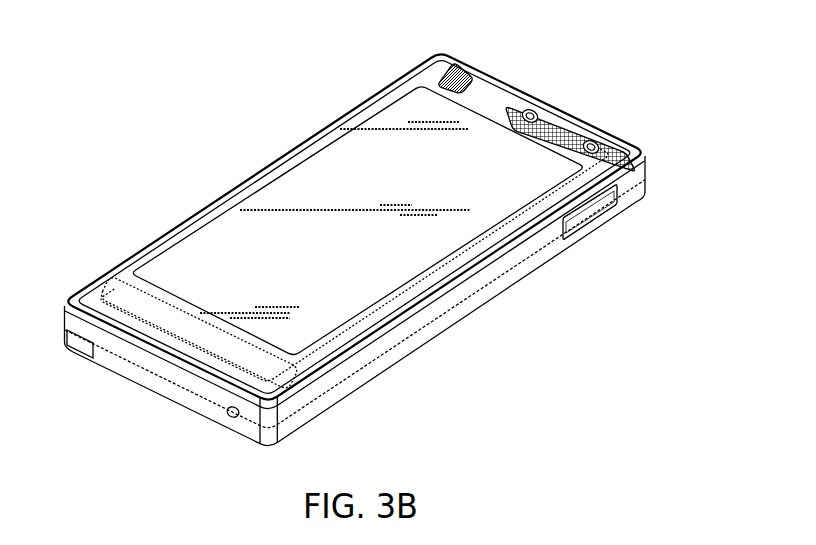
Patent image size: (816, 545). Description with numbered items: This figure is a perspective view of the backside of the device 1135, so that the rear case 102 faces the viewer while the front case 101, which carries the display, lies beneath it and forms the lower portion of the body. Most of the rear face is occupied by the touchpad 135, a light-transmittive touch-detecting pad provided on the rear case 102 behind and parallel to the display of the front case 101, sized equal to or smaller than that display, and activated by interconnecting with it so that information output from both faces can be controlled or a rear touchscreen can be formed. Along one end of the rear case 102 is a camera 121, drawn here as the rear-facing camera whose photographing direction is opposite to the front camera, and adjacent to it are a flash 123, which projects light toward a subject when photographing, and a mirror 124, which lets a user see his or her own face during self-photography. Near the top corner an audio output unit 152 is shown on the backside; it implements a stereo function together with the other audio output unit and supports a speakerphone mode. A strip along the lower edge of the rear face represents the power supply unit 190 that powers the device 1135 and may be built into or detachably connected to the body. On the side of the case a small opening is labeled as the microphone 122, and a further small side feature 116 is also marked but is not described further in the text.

The device 1135 is at (276, 85).
The touchpad 135 is at (293, 187).
The audio output unit 152 is at (468, 70).
The camera 121 is at (543, 107).
The flash 123 is at (580, 114).
The mirror 124 is at (597, 136).
The rear case 102 is at (647, 164).
The front case 101 is at (646, 189).
The power supply unit 190 is at (95, 275).
The microphone 122 is at (90, 352).
The interface port 116 is at (230, 422).